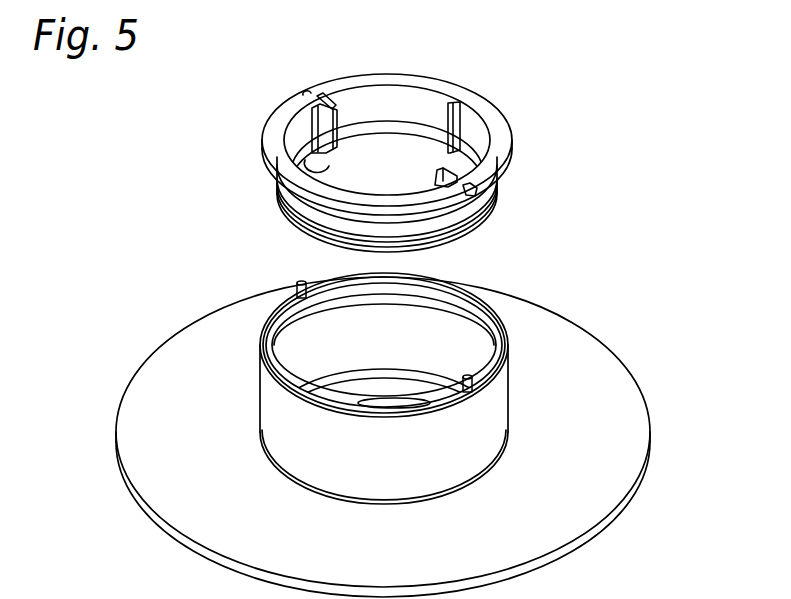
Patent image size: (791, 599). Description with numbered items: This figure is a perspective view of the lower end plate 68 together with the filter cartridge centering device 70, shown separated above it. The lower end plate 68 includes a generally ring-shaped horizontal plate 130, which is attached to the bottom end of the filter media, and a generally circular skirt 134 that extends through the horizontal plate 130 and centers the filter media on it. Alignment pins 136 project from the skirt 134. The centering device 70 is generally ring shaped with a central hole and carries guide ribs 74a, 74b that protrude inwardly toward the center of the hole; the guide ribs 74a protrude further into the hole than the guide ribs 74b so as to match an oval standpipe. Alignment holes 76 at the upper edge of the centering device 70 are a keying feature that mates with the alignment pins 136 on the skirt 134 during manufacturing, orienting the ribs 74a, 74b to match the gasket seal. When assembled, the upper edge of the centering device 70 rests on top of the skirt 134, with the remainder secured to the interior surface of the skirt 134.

The centering device 70 is at (513, 73).
The guide ribs 74a is at (346, 92).
The guide ribs 74b is at (443, 105).
The alignment holes 76 is at (305, 92).
The lower end plate 68 is at (422, 413).
The horizontal plate 130 is at (566, 513).
The skirt 134 is at (490, 426).
The alignment pins 136 is at (300, 283).